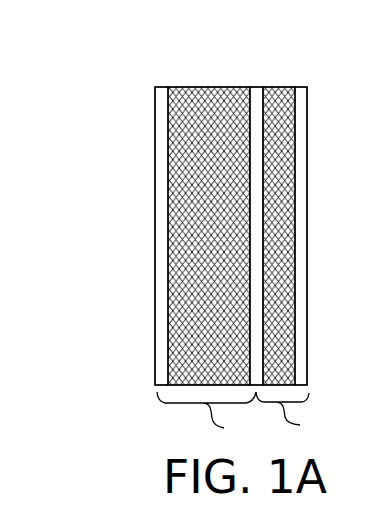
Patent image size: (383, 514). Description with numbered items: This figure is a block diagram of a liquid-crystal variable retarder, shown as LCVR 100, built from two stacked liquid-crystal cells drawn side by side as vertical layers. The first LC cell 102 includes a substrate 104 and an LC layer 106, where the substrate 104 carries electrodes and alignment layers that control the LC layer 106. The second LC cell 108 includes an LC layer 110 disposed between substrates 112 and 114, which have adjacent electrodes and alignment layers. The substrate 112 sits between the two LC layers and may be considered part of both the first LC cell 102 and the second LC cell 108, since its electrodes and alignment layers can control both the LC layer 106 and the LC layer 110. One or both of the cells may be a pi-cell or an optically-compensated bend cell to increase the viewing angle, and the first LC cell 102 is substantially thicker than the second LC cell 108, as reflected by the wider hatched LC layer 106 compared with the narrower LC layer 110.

The LCVR 100 is at (148, 193).
The first LC cell 102 is at (212, 417).
The substrate 104 is at (162, 87).
The LC layer 106 is at (211, 87).
The second LC cell 108 is at (296, 419).
The LC layer 110 is at (282, 87).
The substrate 112 is at (259, 87).
The substrate 114 is at (300, 87).